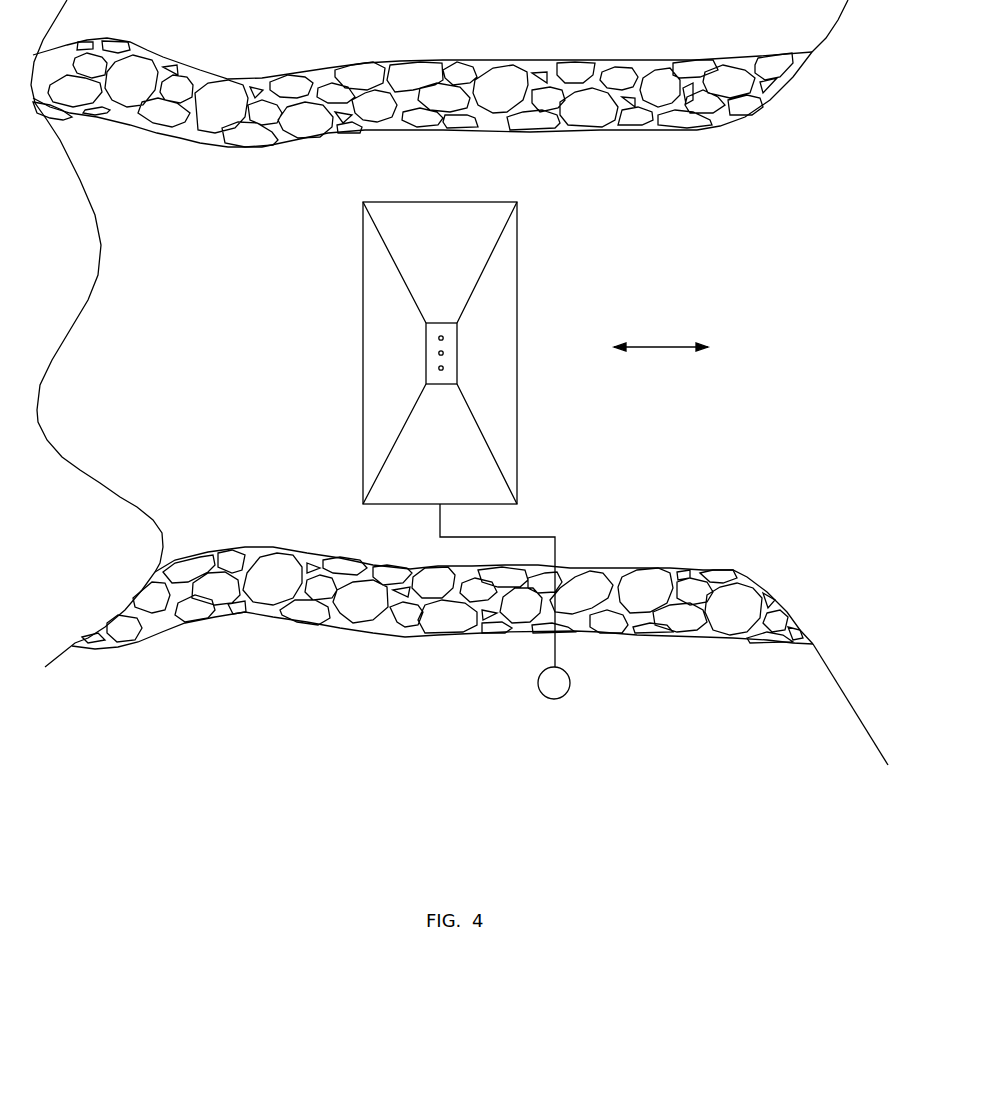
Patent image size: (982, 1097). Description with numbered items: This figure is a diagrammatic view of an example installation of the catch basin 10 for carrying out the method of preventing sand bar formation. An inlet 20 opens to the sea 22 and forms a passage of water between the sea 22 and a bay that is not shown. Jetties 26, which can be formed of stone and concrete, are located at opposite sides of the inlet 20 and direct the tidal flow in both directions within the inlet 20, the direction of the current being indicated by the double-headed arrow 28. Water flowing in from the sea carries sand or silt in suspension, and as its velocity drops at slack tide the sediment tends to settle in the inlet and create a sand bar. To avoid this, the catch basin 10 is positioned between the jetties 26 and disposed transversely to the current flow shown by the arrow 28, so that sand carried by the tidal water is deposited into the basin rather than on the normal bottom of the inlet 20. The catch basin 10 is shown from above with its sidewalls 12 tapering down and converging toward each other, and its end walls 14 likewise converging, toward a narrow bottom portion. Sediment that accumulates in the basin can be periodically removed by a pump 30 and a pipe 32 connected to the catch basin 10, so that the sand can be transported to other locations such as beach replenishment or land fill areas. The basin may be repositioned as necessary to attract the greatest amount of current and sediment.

The catch basin 10 is at (524, 287).
The sidewalls 12 is at (375, 359).
The end walls 14 is at (430, 222).
The inlet 20 is at (674, 272).
The sea 22 is at (817, 287).
The jetties 26 is at (448, 62).
The arrow indicating tidal flow 28 is at (661, 349).
The pump 30 is at (570, 686).
The pipe 32 is at (558, 650).